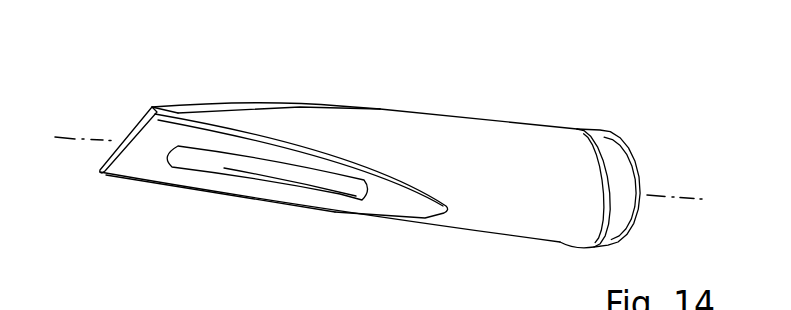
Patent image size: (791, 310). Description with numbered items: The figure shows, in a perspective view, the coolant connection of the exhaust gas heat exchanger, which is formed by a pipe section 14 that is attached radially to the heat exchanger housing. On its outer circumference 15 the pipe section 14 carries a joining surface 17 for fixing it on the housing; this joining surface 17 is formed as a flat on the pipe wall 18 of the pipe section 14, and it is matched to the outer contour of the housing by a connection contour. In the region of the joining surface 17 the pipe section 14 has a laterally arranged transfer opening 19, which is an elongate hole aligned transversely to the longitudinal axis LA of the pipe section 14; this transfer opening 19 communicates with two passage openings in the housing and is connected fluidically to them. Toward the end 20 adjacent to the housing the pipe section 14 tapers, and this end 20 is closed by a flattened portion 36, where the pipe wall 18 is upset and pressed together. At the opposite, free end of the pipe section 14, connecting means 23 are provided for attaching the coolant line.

The longitudinal axis LA is at (66, 135).
The pipe section 14 is at (463, 118).
The outer circumference 15 is at (502, 217).
The joining surface 17 is at (409, 210).
The pipe wall 18 is at (299, 113).
The transfer opening 19 is at (321, 184).
The end adjacent to the housing 20 is at (200, 109).
The connecting means 23 is at (598, 128).
The flattened portion 36 is at (158, 107).